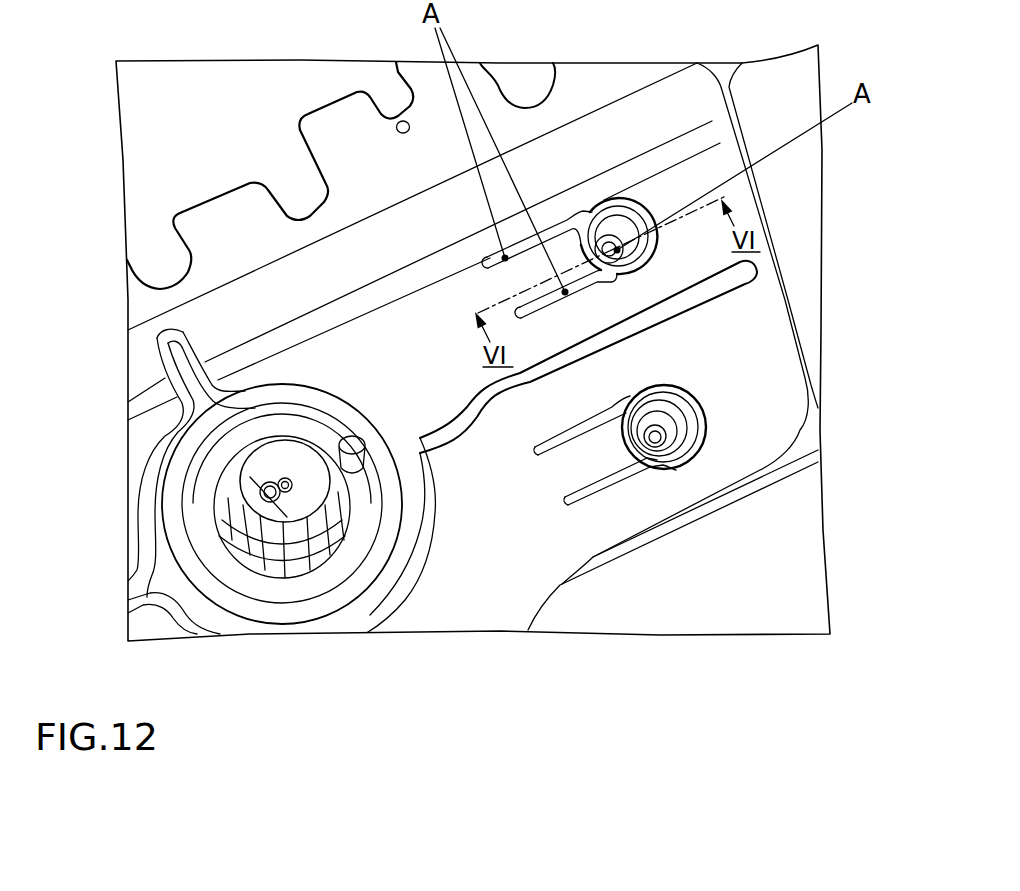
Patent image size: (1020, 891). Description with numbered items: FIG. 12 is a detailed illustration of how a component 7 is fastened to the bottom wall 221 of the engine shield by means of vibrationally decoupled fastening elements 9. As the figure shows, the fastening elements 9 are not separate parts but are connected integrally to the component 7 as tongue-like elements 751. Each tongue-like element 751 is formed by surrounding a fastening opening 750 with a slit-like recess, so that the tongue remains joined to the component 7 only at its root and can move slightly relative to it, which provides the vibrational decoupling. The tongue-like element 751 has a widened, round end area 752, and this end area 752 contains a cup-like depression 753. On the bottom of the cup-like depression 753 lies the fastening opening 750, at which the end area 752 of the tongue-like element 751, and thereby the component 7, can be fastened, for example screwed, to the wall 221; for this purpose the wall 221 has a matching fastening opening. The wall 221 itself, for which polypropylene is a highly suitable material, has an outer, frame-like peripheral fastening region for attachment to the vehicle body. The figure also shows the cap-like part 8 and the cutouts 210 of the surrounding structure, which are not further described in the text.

The component 7 is at (690, 84).
The blower motor cap 8 is at (256, 467).
The fastening element 9 is at (691, 226).
The cutouts 210 is at (228, 197).
The wall 221 is at (688, 585).
The fastening opening 750 is at (623, 267).
The tongue-like element 751 is at (562, 309).
The end area 752 is at (643, 220).
The cup-like depression 753 is at (600, 233).